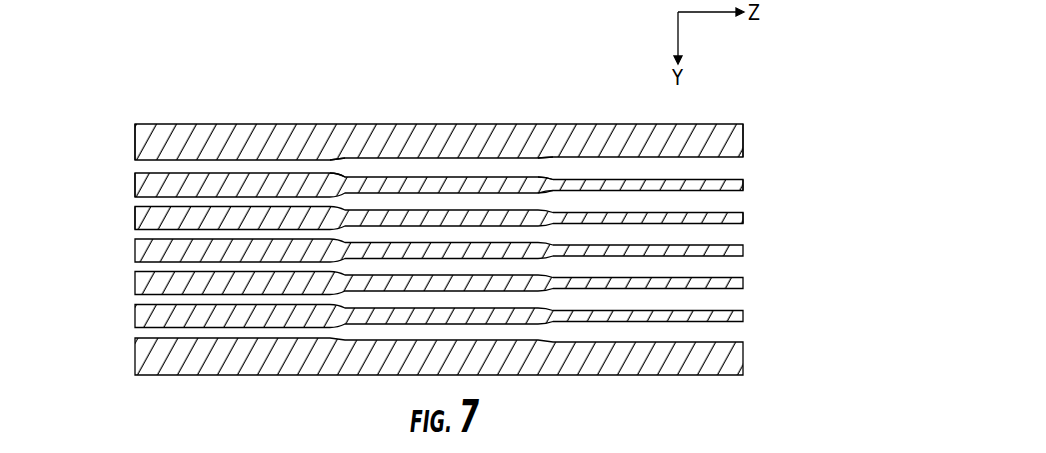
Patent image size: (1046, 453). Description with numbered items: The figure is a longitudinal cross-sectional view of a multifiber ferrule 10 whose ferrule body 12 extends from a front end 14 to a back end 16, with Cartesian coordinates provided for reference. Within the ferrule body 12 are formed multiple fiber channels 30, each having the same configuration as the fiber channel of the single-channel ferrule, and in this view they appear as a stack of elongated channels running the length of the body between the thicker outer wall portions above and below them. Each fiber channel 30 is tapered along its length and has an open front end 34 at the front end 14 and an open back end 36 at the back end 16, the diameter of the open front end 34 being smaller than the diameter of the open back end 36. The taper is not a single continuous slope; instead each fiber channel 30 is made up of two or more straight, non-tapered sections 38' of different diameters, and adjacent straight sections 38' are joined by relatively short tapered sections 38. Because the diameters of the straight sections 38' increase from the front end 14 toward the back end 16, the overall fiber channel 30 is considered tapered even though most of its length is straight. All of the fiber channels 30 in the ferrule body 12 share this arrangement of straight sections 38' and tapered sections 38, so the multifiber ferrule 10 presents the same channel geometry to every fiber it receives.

The multifiber ferrule 10 is at (175, 66).
The ferrule body 12 is at (698, 136).
The front end 14 is at (134, 138).
The back end 16 is at (745, 135).
The fiber channel 30 is at (289, 186).
The open front end 34 is at (135, 201).
The open back end 36 is at (743, 202).
The tapered sections 38 is at (325, 122).
The straight sections 38' is at (410, 128).